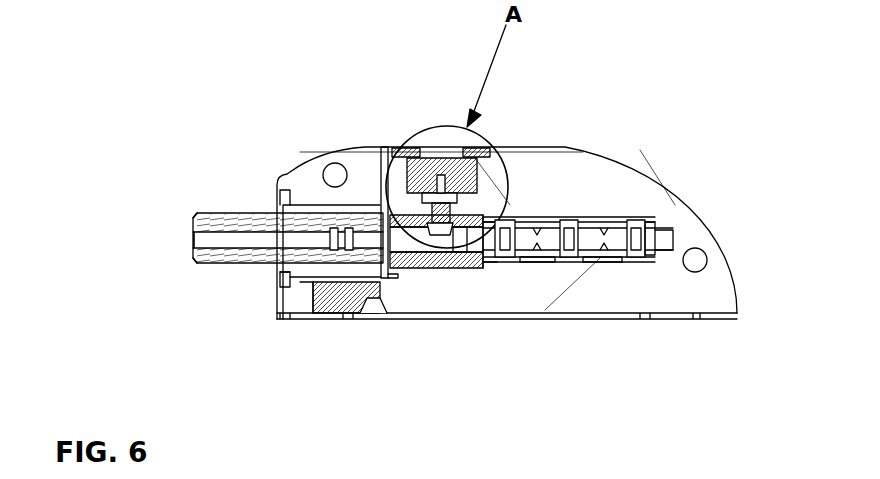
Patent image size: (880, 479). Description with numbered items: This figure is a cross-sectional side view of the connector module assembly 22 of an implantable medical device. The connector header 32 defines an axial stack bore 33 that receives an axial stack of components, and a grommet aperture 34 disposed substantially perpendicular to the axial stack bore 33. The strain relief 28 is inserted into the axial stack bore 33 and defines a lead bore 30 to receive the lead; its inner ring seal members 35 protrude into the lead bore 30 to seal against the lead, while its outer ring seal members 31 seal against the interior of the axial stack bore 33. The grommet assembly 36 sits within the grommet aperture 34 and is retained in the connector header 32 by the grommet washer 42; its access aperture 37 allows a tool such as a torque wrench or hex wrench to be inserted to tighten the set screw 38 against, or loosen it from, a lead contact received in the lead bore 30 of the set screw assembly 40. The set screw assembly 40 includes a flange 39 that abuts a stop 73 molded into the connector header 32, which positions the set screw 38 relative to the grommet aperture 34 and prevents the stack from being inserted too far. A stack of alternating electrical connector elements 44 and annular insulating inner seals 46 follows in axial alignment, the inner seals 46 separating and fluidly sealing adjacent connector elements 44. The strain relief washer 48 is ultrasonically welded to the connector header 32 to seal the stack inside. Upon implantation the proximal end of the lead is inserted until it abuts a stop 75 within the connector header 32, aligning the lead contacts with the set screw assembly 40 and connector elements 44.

The connector module assembly 22 is at (184, 52).
The strain relief 28 is at (240, 212).
The lead bore 30 is at (193, 232).
The outer ring seal members 31 is at (353, 284).
The connector header 32 is at (707, 228).
The axial stack bore 33 is at (289, 294).
The grommet aperture 34 is at (395, 193).
The inner ring seal members 35 is at (348, 228).
The grommet assembly 36 is at (405, 172).
The access aperture 37 is at (441, 176).
The set screw 38 is at (381, 204).
The flange 39 is at (396, 279).
The set screw assembly 40 is at (420, 269).
The grommet washer 42 is at (470, 158).
The electrical connector elements 44 is at (635, 224).
The inner seals 46 is at (607, 258).
The strain relief washer 48 is at (280, 276).
The stop 73 is at (386, 278).
The stop 75 is at (673, 222).